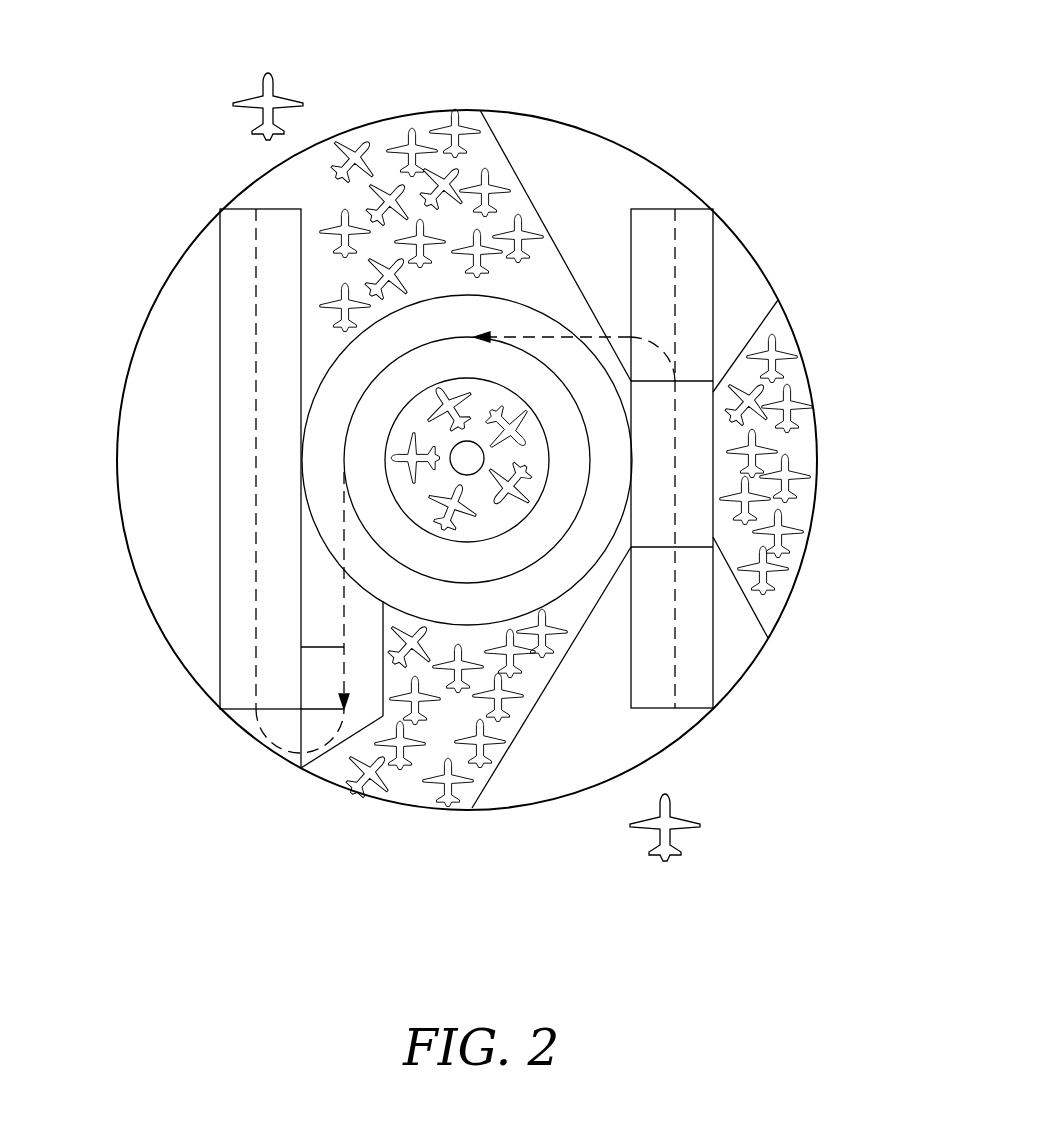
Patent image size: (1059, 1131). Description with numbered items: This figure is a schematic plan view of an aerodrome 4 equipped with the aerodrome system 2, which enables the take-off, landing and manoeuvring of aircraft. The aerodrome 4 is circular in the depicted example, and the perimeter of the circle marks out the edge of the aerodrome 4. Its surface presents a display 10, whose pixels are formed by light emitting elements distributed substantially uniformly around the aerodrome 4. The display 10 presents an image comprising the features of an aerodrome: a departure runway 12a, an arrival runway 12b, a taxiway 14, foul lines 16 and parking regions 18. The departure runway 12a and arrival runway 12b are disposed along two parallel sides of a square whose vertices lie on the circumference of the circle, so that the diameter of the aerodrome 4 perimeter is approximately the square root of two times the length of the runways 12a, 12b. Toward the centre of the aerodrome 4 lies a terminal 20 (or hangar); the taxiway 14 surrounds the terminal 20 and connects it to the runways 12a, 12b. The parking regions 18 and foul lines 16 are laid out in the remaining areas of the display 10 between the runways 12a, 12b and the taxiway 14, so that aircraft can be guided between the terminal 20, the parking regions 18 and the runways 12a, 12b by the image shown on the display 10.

The aerodrome system 2 is at (484, 418).
The aerodrome 4 is at (484, 460).
The display 10 is at (670, 174).
The departure runway 12a is at (220, 267).
The arrival runway 12b is at (713, 283).
The taxiway 14 is at (318, 378).
The foul lines 16 is at (327, 757).
The parking regions 18 is at (312, 338).
The terminal 20 is at (457, 441).